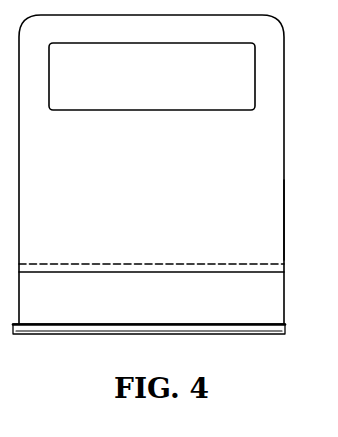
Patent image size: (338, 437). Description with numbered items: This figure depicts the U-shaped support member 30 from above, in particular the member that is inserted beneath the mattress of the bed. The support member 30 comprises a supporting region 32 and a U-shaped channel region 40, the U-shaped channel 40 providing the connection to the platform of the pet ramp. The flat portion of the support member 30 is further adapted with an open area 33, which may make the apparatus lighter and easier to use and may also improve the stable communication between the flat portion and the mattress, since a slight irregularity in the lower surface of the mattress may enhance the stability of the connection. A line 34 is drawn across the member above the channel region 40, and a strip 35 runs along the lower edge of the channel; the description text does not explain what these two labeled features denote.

The support member 30 is at (284, 133).
The supporting region 32 is at (273, 206).
The open area 33 is at (172, 71).
The fold line 34 is at (203, 253).
The U-shaped channel 40 is at (275, 300).
The bottom strip 35 is at (232, 338).